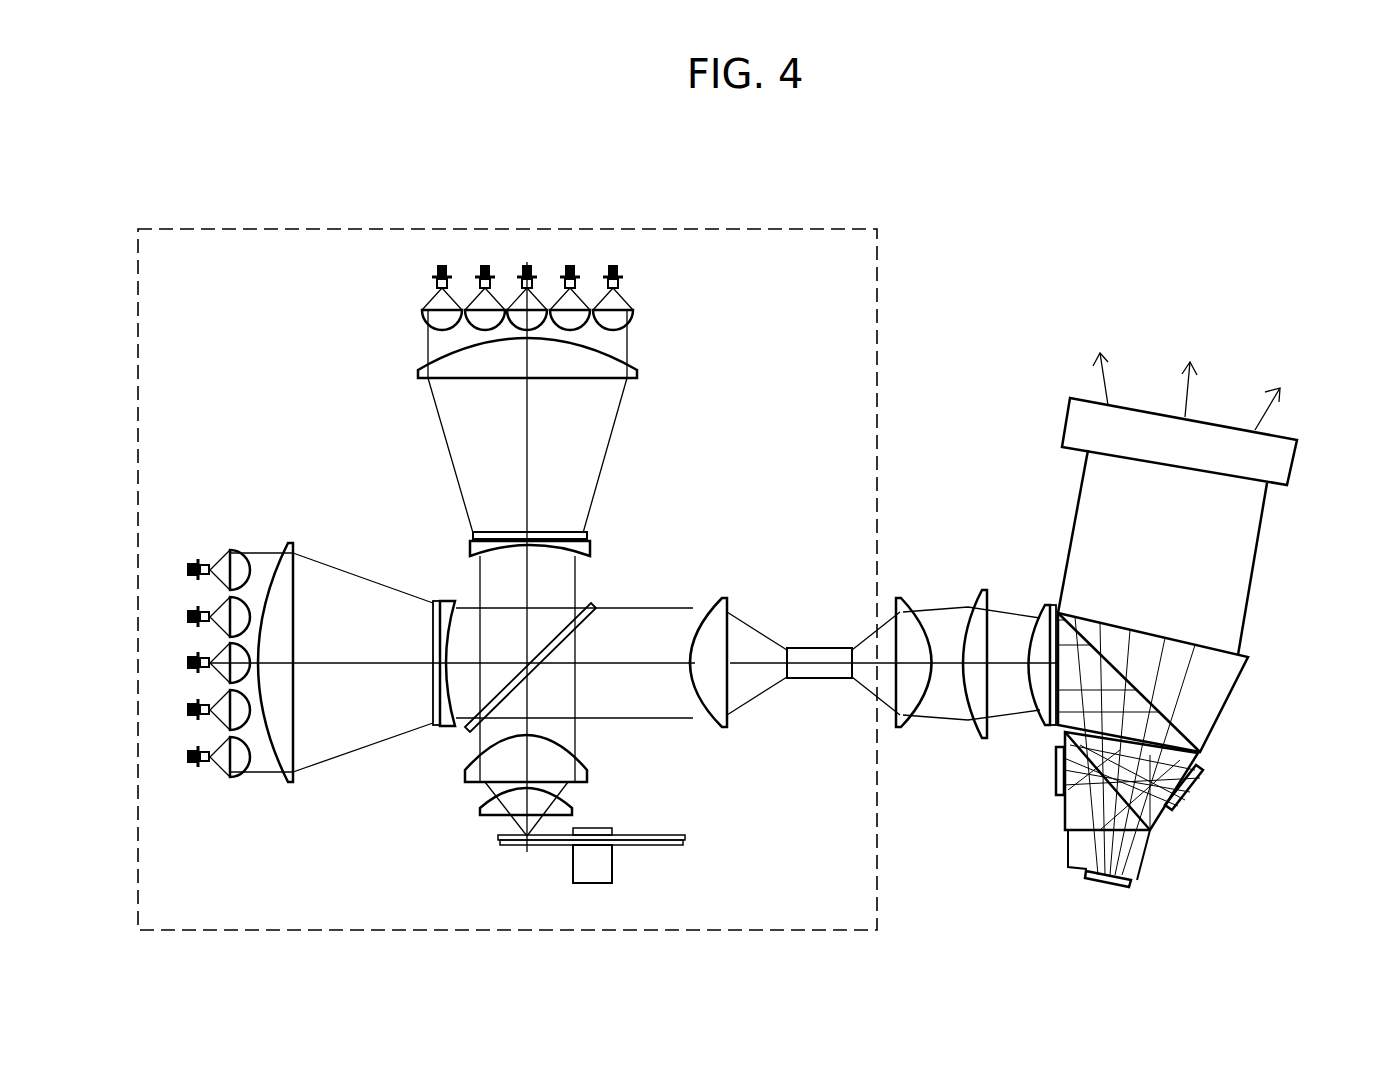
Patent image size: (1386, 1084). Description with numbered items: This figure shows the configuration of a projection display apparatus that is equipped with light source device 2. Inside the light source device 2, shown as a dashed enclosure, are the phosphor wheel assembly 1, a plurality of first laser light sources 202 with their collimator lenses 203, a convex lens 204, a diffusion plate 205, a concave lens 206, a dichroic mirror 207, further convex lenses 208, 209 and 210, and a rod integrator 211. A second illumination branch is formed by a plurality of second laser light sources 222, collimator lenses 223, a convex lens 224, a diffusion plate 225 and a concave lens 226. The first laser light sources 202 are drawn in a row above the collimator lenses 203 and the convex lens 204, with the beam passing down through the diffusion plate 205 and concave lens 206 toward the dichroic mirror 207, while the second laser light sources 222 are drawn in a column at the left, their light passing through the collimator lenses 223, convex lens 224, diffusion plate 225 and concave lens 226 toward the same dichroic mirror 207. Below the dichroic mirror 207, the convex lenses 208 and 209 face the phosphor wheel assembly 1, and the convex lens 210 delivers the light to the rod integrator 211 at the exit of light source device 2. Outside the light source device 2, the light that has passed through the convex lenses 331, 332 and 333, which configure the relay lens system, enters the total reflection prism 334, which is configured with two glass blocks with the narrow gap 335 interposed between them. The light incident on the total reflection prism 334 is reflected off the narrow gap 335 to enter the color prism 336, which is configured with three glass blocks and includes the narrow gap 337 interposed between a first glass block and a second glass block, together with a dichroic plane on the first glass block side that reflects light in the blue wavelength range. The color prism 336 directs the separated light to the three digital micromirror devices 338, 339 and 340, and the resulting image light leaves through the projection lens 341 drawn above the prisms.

The phosphor wheel assembly 1 is at (670, 855).
The light source device 2 is at (232, 229).
The first laser light sources 202 is at (432, 278).
The collimator lenses 203 is at (438, 320).
The convex lens 204 is at (425, 373).
The diffusion plate 205 is at (473, 534).
The concave lens 206 is at (470, 548).
The dichroic mirror 207 is at (468, 729).
The convex lens 208 is at (474, 774).
The convex lens 209 is at (490, 812).
The convex lens 210 is at (722, 596).
The rod integrator 211 is at (829, 671).
The second laser light sources 222 is at (196, 562).
The collimator lenses 223 is at (232, 770).
The convex lens 224 is at (282, 775).
The diffusion plate 225 is at (434, 726).
The concave lens 226 is at (447, 727).
The convex lens 331 is at (900, 598).
The convex lens 332 is at (972, 712).
The convex lens 333 is at (1046, 602).
The total reflection prism 334 is at (1220, 668).
The narrow gap 335 is at (1196, 740).
The color prism 336 is at (1066, 846).
The narrow gap 337 is at (1148, 822).
The digital micromirror device 338 is at (1202, 795).
The digital micromirror device 339 is at (1052, 770).
The digital micromirror device 340 is at (1106, 886).
The projection lens 341 is at (1112, 535).